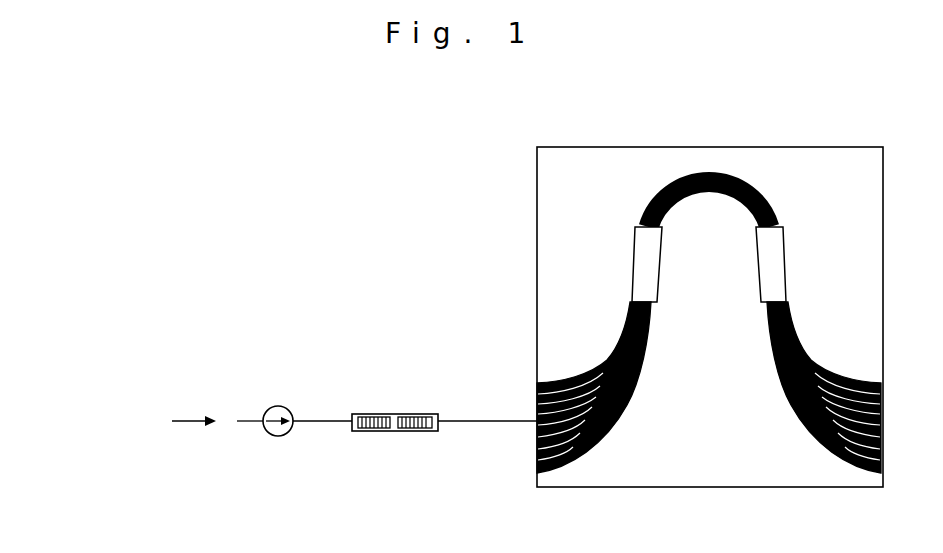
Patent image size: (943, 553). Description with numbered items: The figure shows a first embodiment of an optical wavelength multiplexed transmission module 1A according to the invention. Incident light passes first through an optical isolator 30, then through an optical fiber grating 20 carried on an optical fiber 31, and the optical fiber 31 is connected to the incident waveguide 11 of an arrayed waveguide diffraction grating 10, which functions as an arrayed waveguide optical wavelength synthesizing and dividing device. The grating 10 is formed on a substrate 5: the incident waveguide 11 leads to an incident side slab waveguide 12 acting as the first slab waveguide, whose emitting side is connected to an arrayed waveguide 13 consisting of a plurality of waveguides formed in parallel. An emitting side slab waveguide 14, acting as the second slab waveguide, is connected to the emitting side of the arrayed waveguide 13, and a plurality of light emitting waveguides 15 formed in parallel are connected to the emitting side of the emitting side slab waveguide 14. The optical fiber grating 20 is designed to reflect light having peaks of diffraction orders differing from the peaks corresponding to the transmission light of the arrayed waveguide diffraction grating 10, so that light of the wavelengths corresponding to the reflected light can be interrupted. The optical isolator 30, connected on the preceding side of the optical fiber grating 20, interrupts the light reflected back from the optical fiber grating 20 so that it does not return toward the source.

The optical wavelength multiplexed transmission module 1A is at (374, 236).
The arrayed waveguide diffraction grating 10 is at (509, 167).
The substrate 5 is at (568, 203).
The incident waveguide 11 is at (552, 360).
The incident side slab waveguide 12 is at (636, 276).
The arrayed waveguide 13 is at (692, 174).
The emitting side slab waveguide 14 is at (780, 274).
The light emitting waveguides 15 is at (863, 361).
The optical fiber grating 20 is at (366, 392).
The optical isolator 30 is at (278, 404).
The optical fiber 31 is at (457, 422).